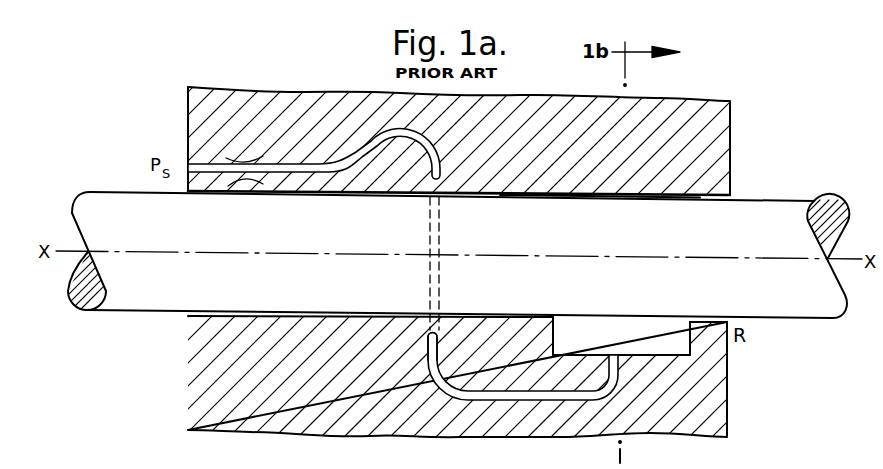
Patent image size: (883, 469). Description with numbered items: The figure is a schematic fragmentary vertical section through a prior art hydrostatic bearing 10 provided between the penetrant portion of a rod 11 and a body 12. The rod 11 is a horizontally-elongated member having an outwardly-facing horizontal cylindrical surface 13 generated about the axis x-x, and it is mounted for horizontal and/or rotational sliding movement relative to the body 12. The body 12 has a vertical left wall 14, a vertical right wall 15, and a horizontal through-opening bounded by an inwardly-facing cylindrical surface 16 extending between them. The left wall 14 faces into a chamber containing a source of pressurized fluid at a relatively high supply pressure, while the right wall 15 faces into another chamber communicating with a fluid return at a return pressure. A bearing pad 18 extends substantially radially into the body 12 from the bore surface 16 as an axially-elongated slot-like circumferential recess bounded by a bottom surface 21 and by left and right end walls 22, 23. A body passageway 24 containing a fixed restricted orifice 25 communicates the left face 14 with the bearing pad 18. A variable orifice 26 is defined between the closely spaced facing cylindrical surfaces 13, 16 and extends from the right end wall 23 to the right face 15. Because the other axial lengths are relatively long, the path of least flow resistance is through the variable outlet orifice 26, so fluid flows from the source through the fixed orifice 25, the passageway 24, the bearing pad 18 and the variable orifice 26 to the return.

The hydrostatic bearing 10 is at (151, 77).
The rod 11 is at (786, 196).
The body 12 is at (743, 107).
The outwardly-facing horizontal cylindrical surface 13 is at (532, 196).
The vertical left wall 14 is at (187, 105).
The vertical right wall 15 is at (728, 384).
The inwardly-facing cylindrical surface 16 is at (572, 199).
The bearing pad 18 is at (634, 346).
The bottom surface 21 is at (600, 356).
The left end wall 22 is at (554, 343).
The right end wall 23 is at (690, 343).
The body passageway 24 is at (428, 366).
The fixed restricted orifice 25 is at (250, 147).
The variable orifice 26 is at (718, 299).